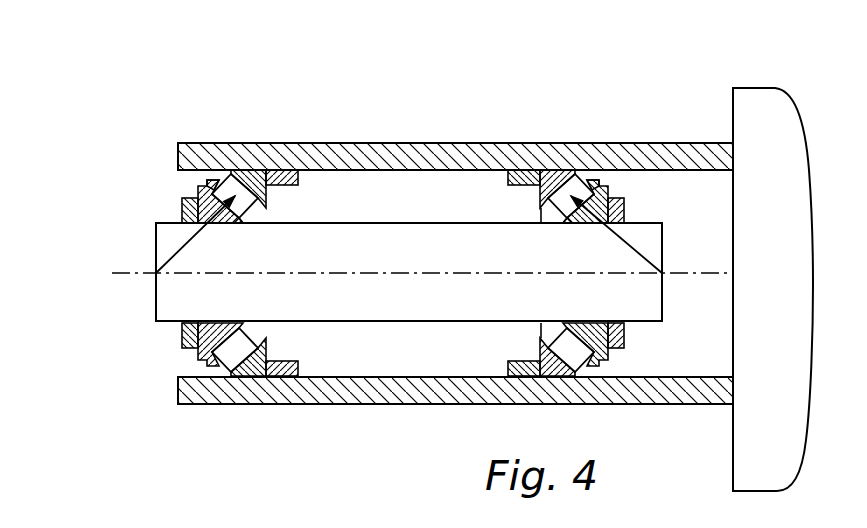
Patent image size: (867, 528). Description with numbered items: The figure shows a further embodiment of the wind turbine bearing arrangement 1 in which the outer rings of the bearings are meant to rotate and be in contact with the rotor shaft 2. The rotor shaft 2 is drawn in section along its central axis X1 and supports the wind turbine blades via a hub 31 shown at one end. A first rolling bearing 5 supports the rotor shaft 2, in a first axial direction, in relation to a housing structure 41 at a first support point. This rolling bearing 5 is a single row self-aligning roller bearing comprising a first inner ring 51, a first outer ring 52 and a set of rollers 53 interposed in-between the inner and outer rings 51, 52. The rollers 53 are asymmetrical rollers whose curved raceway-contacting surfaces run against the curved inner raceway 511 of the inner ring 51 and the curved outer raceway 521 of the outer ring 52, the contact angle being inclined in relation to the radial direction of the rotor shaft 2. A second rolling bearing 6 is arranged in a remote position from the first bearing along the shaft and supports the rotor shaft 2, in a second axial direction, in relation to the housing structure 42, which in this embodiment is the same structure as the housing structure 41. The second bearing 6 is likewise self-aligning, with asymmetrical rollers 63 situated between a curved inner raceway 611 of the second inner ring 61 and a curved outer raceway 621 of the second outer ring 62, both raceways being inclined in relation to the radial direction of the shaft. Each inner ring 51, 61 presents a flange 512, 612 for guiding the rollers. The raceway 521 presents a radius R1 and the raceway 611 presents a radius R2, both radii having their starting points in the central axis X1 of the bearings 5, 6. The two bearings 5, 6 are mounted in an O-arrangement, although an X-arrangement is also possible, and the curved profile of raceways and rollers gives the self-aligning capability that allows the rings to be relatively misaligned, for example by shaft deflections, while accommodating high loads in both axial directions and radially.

The wind turbine bearing arrangement 1 is at (693, 93).
The rotor shaft 2 is at (457, 150).
The hub 31 is at (810, 297).
The housing structure 41 is at (345, 272).
The housing structure 42 is at (156, 312).
The first rolling bearing 5 is at (567, 209).
The first inner ring 51 is at (567, 209).
The inner raceway 511 is at (577, 223).
The flange 512 is at (607, 183).
The first outer ring 52 is at (528, 151).
The outer raceway 521 is at (556, 172).
The rollers 53 is at (560, 221).
The second rolling bearing 6 is at (255, 147).
The second inner ring 61 is at (255, 156).
The inner raceway 611 is at (238, 223).
The flange 612 is at (205, 182).
The second outer ring 62 is at (284, 141).
The outer raceway 621 is at (282, 176).
The rollers 63 is at (200, 377).
The radius R1 is at (630, 238).
The radius R2 is at (180, 248).
The central axis X1 is at (121, 273).